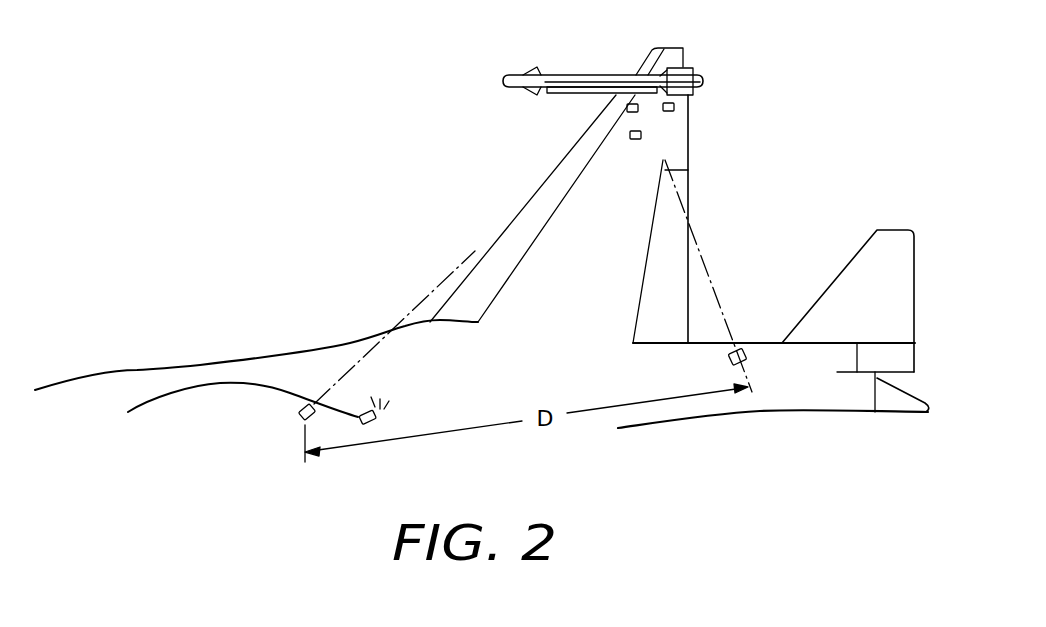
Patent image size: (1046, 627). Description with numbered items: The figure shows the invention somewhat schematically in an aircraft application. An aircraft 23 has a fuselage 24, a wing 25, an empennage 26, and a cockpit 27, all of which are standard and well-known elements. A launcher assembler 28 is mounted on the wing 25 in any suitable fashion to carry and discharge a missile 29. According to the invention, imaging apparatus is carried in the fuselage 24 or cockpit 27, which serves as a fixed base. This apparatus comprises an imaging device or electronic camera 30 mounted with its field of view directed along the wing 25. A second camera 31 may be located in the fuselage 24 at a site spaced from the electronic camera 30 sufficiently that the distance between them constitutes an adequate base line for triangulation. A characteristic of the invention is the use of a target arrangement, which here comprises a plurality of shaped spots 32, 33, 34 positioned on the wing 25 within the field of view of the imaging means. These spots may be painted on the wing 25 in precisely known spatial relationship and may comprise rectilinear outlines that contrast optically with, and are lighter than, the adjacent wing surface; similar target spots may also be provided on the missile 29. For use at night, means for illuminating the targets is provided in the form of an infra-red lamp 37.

The aircraft 23 is at (232, 337).
The fuselage 24 is at (495, 385).
The wing 25 is at (611, 246).
The empennage 26 is at (773, 402).
The cockpit 27 is at (220, 388).
The launcher assembler 28 is at (570, 94).
The missile 29 is at (510, 76).
The electronic camera 30 is at (299, 415).
The second camera 31 is at (745, 360).
The shaped spot 32 is at (676, 107).
The shaped spot 33 is at (640, 108).
The shaped spot 34 is at (643, 135).
The infra-red lamp 37 is at (377, 423).